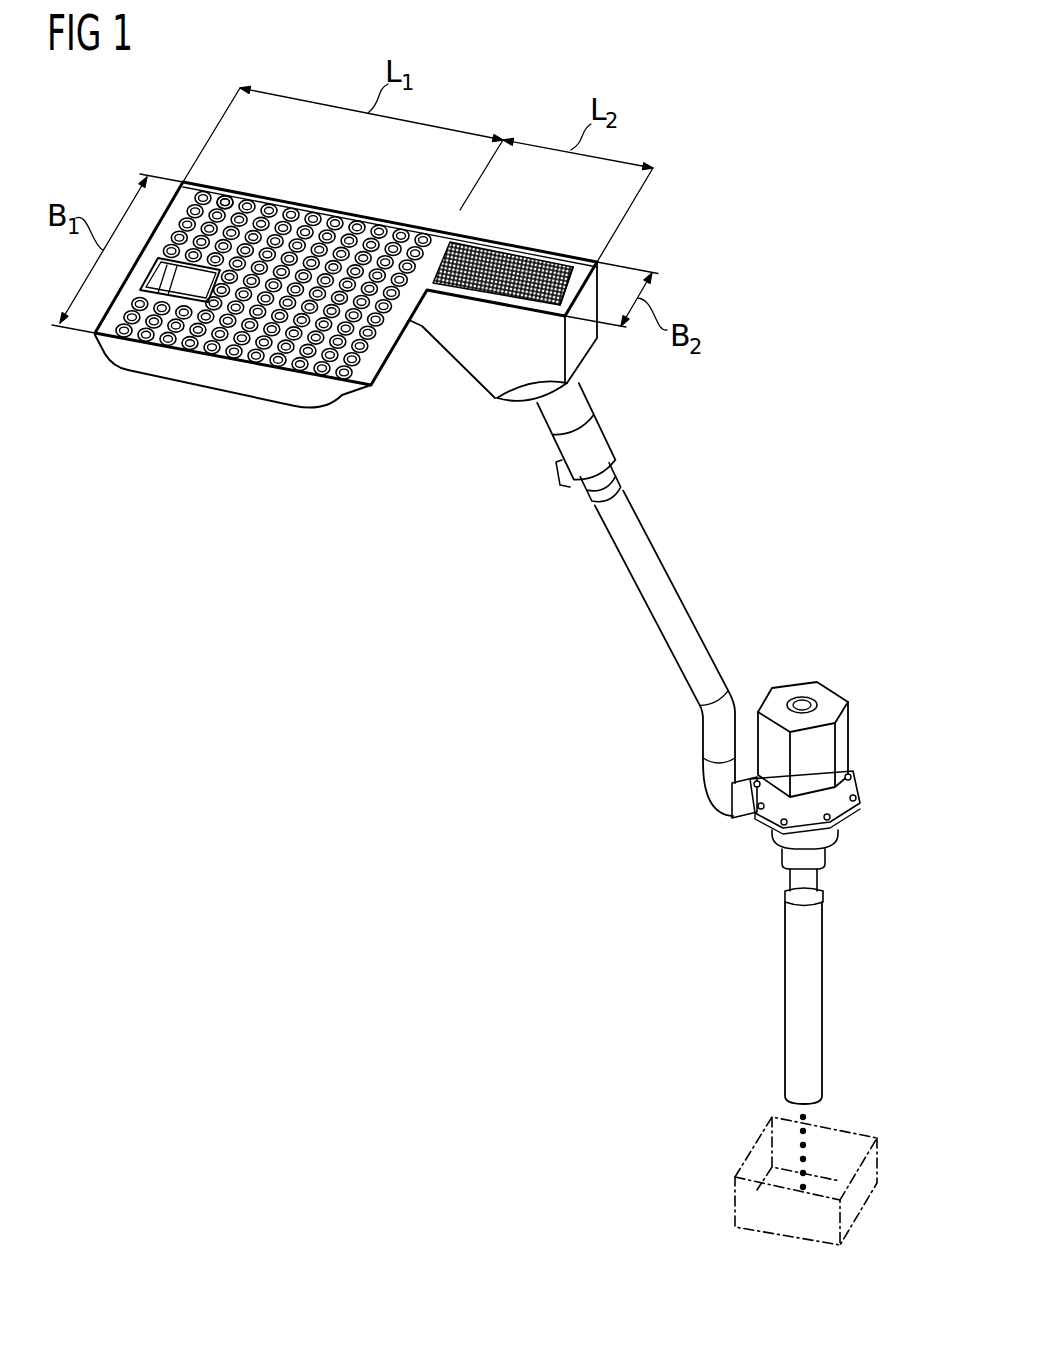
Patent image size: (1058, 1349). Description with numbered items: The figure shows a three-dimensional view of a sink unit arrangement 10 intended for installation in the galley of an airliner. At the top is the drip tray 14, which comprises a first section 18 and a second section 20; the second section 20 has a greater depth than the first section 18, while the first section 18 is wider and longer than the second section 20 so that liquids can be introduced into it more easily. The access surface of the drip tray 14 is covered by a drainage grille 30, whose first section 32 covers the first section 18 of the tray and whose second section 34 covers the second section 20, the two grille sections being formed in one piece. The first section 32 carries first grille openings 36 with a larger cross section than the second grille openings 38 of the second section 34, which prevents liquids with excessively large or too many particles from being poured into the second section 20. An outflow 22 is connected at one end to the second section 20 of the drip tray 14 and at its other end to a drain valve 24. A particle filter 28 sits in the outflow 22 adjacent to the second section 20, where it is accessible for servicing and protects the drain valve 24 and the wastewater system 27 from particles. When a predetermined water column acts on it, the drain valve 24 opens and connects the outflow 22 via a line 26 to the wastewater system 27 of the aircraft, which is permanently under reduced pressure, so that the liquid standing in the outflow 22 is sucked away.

The sink unit arrangement 10 is at (683, 287).
The drip tray 14 is at (393, 218).
The first section 18 is at (254, 386).
The second section 20 is at (578, 337).
The outflow 22 is at (662, 594).
The drain valve 24 is at (838, 745).
The line 26 is at (810, 988).
The wastewater system 27 is at (878, 1152).
The particle filter 28 is at (598, 441).
The drainage grille 30 is at (183, 180).
The first section 32 is at (283, 201).
The second section 34 is at (520, 250).
The first grille openings 36 is at (226, 196).
The second grille openings 38 is at (560, 263).